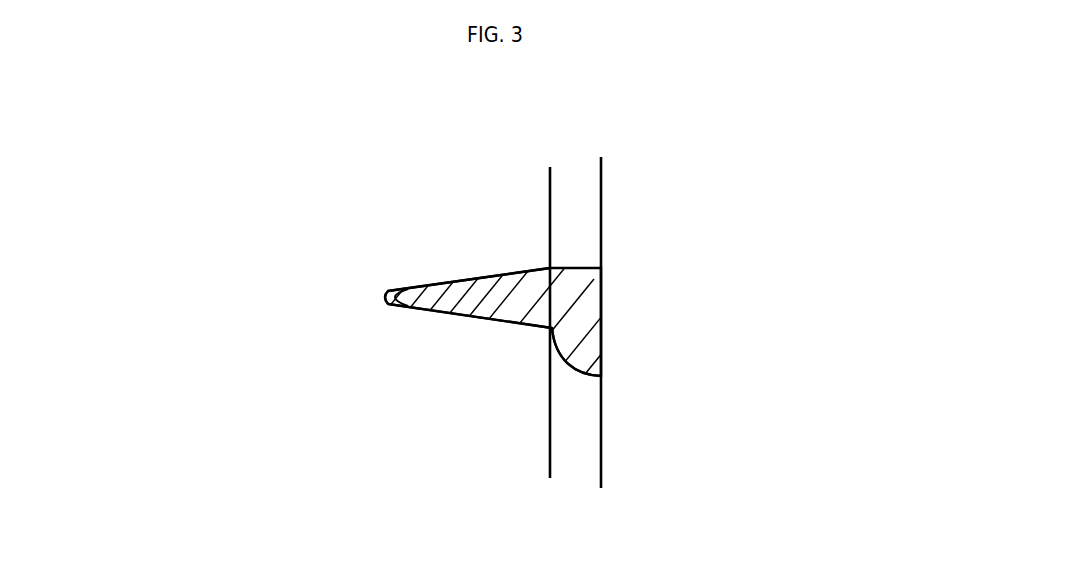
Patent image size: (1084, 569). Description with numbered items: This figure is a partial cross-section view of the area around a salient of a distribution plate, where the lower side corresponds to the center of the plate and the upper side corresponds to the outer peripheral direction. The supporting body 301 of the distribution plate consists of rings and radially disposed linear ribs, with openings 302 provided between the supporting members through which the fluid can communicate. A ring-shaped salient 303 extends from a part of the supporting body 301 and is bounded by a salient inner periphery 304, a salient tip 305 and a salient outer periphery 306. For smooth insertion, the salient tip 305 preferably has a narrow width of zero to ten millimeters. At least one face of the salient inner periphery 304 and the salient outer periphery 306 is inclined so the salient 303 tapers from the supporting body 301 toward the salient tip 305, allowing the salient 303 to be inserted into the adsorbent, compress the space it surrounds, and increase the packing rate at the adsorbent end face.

The supporting body 301 is at (580, 323).
The opening 302 is at (580, 207).
The salient 303 is at (507, 297).
The salient inner periphery 304 is at (472, 318).
The salient tip 305 is at (387, 300).
The salient outer periphery 306 is at (425, 280).